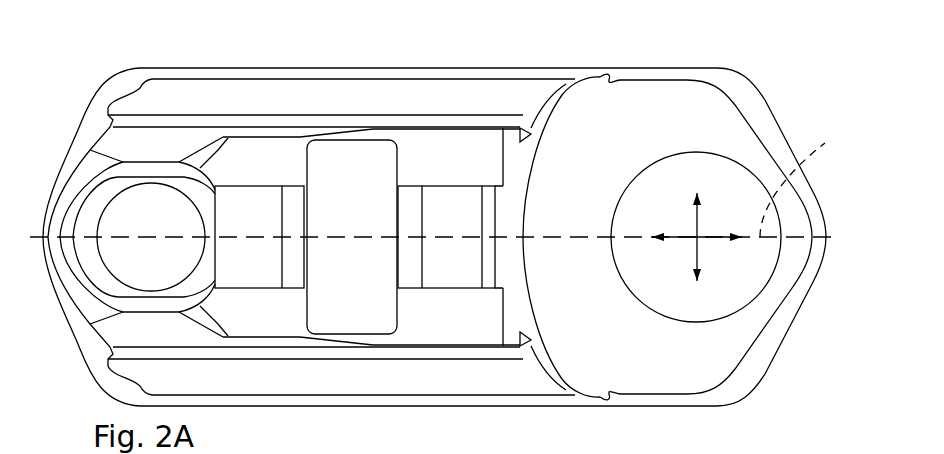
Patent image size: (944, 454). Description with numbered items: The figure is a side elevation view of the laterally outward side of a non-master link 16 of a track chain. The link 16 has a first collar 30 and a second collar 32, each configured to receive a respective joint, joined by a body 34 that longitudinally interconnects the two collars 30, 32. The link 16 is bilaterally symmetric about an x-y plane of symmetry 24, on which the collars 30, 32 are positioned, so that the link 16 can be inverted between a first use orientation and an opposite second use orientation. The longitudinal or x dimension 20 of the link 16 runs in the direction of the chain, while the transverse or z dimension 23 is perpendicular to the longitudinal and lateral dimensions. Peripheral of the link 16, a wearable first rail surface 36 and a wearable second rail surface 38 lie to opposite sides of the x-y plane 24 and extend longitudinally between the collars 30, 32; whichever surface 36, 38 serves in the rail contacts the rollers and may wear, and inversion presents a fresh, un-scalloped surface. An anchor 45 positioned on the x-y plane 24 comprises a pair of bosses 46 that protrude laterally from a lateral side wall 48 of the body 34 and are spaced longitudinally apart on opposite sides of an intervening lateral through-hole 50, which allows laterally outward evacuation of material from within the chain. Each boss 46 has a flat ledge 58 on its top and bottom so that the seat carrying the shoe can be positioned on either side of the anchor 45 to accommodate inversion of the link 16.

The non-master link 16 is at (135, 60).
The longitudinal dimension 20 is at (678, 235).
The transverse dimension 23 is at (696, 250).
The x-y plane of symmetry 24 is at (799, 177).
The first collar 30 is at (98, 200).
The second collar 32 is at (767, 140).
The body 34 is at (467, 143).
The first rail surface 36 is at (540, 68).
The second rail surface 38 is at (434, 407).
The anchor 45 is at (405, 47).
The bosses 46 is at (272, 204).
The lateral side wall 48 is at (477, 143).
The lateral through-hole 50 is at (307, 260).
The flat ledge 58 is at (264, 198).